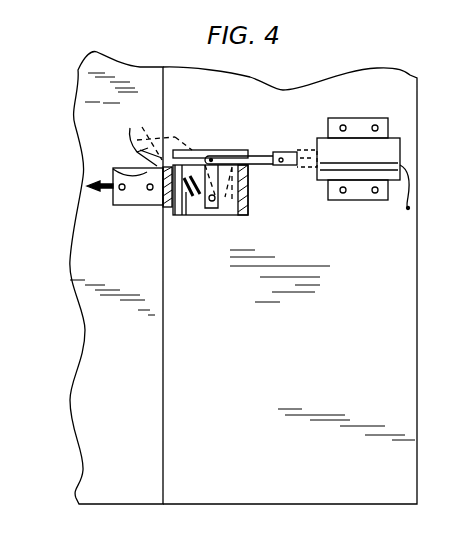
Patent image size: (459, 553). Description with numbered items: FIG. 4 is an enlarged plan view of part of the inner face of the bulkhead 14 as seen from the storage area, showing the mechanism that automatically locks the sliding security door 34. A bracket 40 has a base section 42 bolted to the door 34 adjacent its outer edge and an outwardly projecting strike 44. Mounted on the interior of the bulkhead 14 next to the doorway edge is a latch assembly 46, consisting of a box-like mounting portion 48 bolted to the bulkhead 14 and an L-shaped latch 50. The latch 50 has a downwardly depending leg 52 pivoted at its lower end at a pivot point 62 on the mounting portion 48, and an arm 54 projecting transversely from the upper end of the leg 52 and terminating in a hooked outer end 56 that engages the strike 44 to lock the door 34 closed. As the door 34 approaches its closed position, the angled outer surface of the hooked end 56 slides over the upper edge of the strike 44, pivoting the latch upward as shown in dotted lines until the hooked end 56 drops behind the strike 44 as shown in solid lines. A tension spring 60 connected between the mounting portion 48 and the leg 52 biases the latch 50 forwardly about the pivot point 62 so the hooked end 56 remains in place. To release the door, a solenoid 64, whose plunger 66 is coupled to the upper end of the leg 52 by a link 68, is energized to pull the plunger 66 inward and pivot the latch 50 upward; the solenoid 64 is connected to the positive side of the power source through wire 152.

The bulkhead 14 is at (274, 368).
The security door 34 is at (132, 368).
The bracket 40 is at (87, 186).
The base section 42 is at (118, 197).
The strike 44 is at (157, 195).
The latch assembly 46 is at (215, 200).
The mounting portion 48 is at (165, 207).
The latch 50 is at (194, 153).
The leg 52 is at (237, 193).
The arm 54 is at (137, 152).
The hooked outer end 56 is at (147, 173).
The tension spring 60 is at (186, 205).
The pivot point 62 is at (218, 206).
The solenoid 64 is at (335, 160).
The plunger 66 is at (302, 152).
The link 68 is at (258, 155).
The wire 152 is at (402, 197).